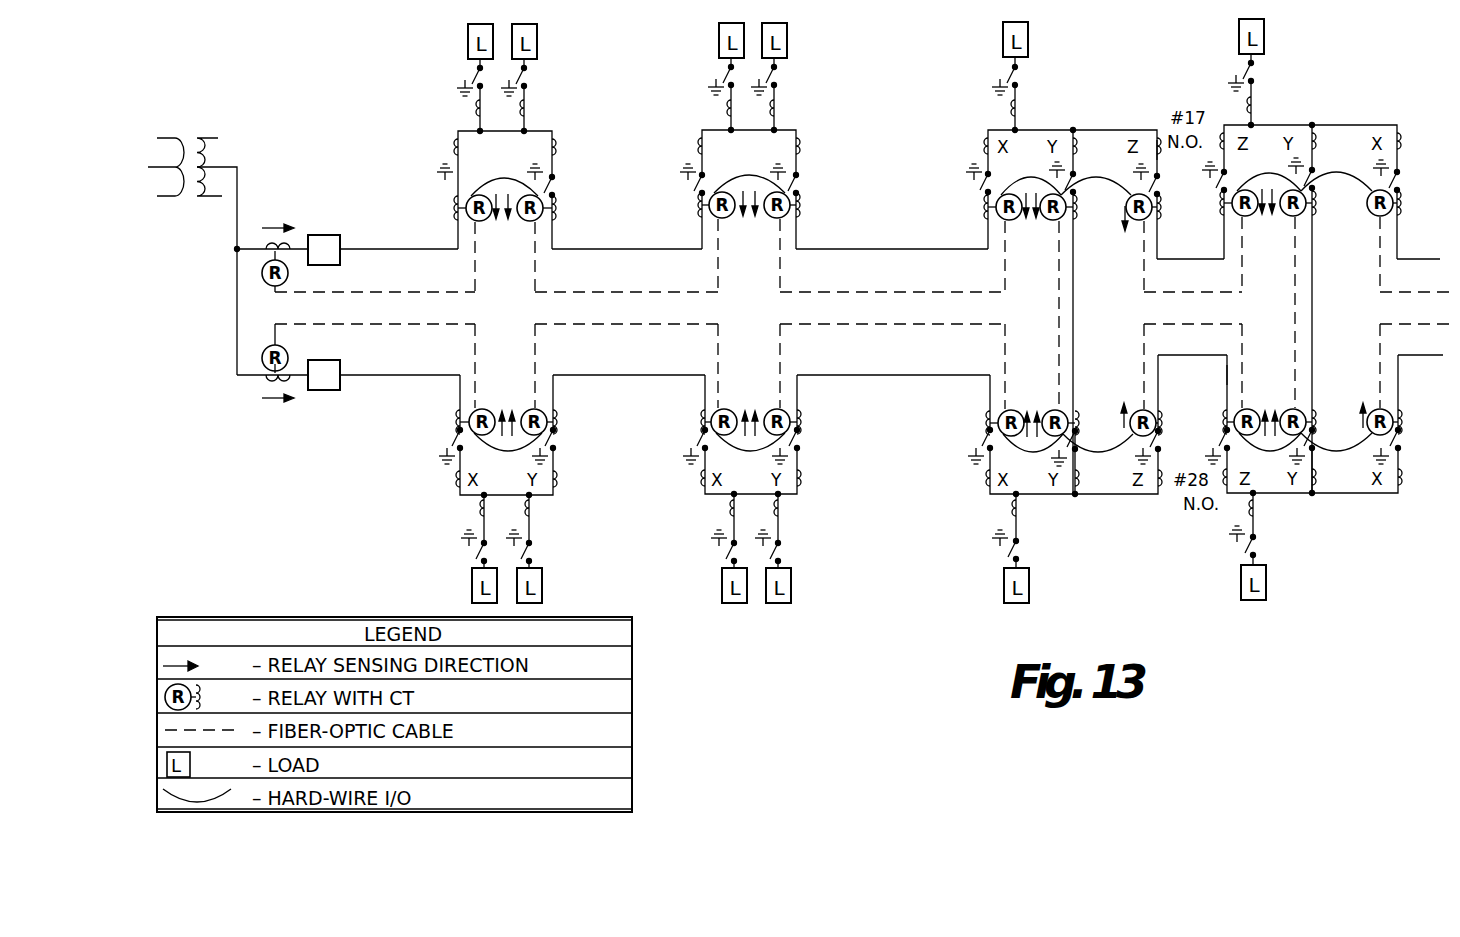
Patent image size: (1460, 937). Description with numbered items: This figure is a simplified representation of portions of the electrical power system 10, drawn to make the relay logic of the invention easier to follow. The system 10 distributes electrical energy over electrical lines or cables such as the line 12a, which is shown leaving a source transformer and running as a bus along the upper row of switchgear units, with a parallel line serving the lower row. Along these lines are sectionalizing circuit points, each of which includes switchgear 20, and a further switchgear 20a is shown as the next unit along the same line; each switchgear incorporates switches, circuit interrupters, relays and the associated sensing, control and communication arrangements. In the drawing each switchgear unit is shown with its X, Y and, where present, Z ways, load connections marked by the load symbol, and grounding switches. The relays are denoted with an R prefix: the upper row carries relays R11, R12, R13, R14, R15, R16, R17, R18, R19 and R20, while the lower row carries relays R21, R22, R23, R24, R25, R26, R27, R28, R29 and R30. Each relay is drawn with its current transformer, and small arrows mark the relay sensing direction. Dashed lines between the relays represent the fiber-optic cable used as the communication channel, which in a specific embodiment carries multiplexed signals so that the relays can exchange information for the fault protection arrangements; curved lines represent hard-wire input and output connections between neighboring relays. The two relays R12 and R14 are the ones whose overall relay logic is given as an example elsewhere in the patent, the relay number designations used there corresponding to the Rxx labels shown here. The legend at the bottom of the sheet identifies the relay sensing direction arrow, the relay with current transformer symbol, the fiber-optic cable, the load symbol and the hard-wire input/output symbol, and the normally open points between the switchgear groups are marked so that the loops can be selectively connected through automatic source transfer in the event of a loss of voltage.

The electrical power system 10 is at (730, 674).
The electrical line or cable 12a is at (383, 248).
The switchgear 20 is at (560, 131).
The switchgear 20a is at (826, 125).
The relay R11 is at (448, 208).
The relay R12 is at (558, 208).
The relay R13 is at (694, 205).
The relay R14 is at (807, 205).
The relay R15 is at (981, 207).
The relay R16 is at (1079, 207).
The relay R17 is at (1160, 214).
The relay R18 is at (1180, 177).
The relay R19 is at (1317, 203).
The relay R20 is at (1407, 203).
The relay R21 is at (450, 422).
The relay R22 is at (559, 422).
The relay R23 is at (696, 422).
The relay R24 is at (802, 422).
The relay R25 is at (981, 423).
The relay R26 is at (1080, 423).
The relay R27 is at (1164, 415).
The relay R28 is at (1206, 399).
The relay R29 is at (1317, 422).
The relay R30 is at (1406, 422).